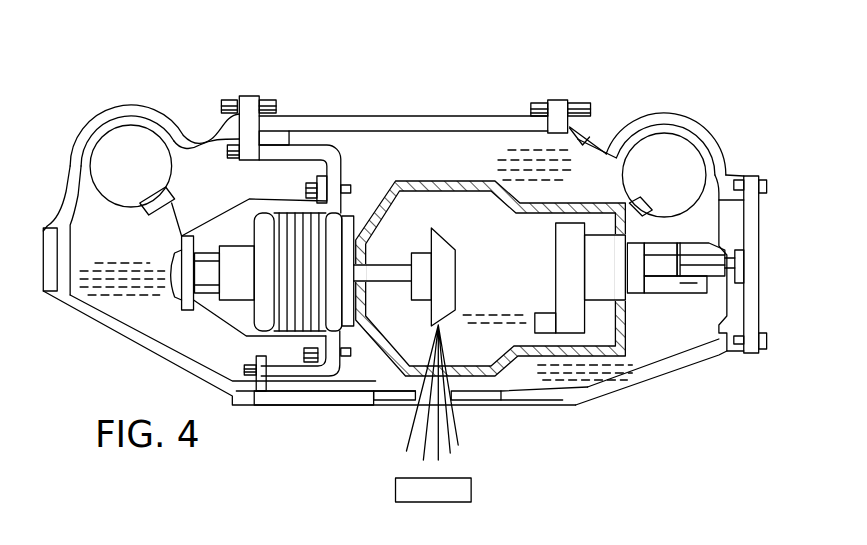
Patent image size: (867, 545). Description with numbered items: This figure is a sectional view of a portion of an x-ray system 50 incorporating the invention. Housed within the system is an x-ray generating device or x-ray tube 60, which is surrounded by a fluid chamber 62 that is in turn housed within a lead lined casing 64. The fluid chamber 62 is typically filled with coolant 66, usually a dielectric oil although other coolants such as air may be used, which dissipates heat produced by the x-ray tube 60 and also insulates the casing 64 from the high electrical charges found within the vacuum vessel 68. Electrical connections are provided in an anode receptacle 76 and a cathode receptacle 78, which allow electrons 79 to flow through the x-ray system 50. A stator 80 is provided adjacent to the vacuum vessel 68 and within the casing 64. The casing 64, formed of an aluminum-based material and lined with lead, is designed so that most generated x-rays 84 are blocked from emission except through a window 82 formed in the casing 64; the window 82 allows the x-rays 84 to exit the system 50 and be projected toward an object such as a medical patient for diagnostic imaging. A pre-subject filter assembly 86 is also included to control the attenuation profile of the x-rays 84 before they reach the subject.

The x-ray system 50 is at (590, 62).
The x-ray tube 60 is at (437, 168).
The fluid chamber 62 is at (588, 132).
The casing 64 is at (663, 378).
The coolant 66 is at (530, 150).
The vacuum vessel 68 is at (457, 178).
The anode receptacle 76 is at (123, 132).
The cathode receptacle 78 is at (683, 146).
The electrons 79 is at (487, 305).
The stator 80 is at (303, 318).
The window 82 is at (395, 403).
The x-rays 84 is at (452, 434).
The pre-subject filter assembly 86 is at (473, 487).